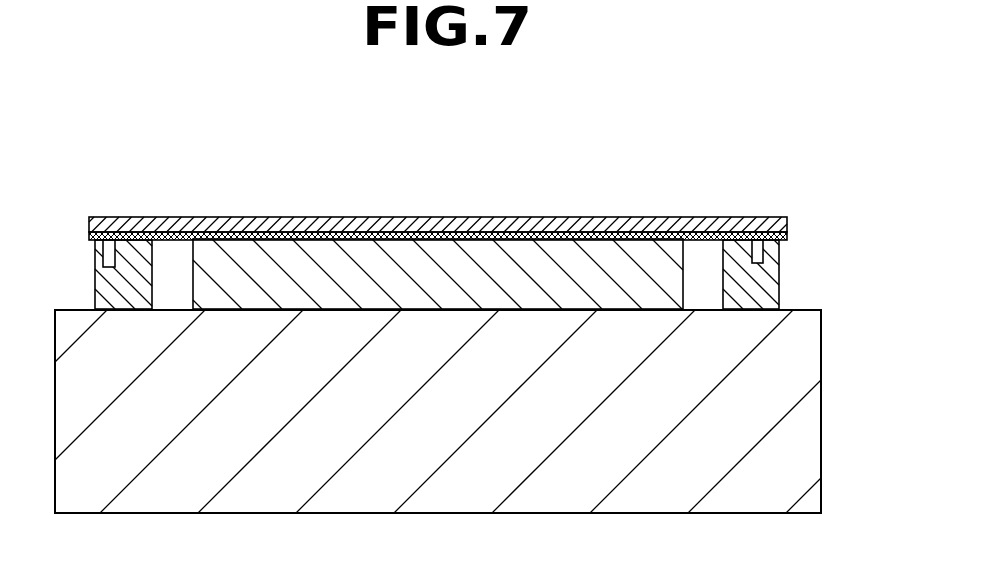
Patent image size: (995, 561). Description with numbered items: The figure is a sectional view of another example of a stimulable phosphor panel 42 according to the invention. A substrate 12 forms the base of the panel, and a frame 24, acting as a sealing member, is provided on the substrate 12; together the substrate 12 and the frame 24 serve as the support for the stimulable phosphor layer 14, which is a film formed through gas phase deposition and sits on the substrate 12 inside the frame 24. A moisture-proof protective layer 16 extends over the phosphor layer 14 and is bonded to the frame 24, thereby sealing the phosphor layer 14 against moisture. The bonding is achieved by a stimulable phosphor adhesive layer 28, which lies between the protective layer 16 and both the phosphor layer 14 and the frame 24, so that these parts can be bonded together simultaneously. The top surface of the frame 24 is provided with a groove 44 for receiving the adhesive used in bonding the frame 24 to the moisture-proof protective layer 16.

The substrate 12 is at (821, 416).
The stimulable phosphor layer 14 is at (512, 252).
The moisture-proof protective layer 16 is at (590, 218).
The frame 24 is at (98, 290).
The stimulable phosphor adhesive layer 28 is at (645, 236).
The piezoelectric element assembly 42 is at (693, 140).
The groove for adhesive 44 is at (105, 250).